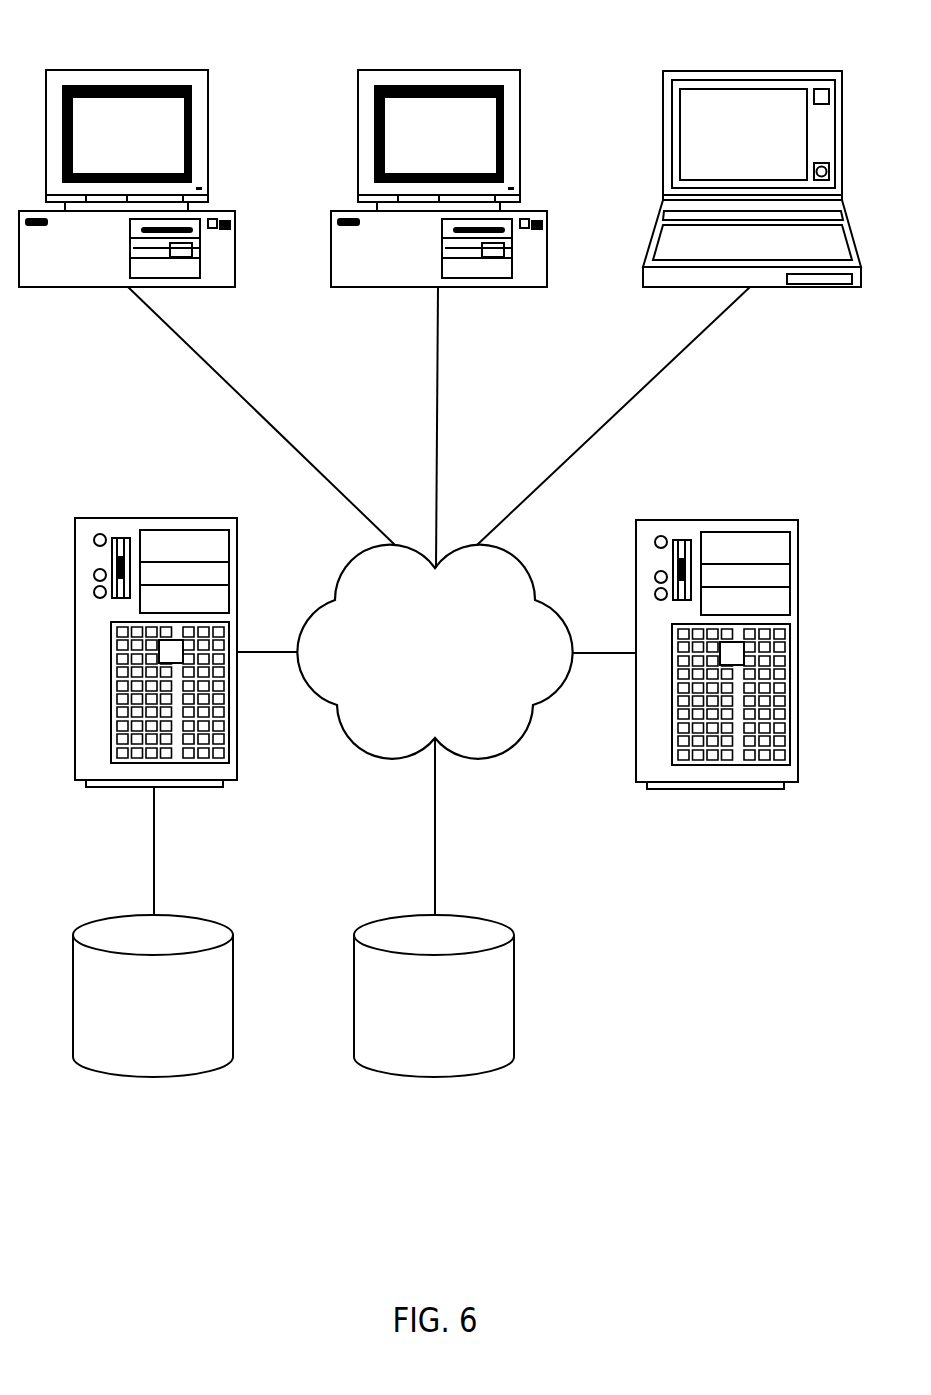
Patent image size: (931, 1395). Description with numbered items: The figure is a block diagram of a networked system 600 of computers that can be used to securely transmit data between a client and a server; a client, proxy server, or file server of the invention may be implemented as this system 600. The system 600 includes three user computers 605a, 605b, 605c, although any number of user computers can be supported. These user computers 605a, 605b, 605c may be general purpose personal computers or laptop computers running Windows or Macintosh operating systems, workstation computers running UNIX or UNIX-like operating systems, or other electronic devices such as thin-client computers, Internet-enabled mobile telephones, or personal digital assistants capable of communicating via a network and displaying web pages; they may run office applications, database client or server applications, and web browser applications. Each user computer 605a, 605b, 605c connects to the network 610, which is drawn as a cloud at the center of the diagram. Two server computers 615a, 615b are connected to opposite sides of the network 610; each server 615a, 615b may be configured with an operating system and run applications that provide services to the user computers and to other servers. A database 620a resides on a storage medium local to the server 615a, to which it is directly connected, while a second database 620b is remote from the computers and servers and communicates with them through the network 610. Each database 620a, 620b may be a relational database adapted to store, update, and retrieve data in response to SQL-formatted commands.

The system 600 is at (704, 1143).
The user computer 605a is at (235, 230).
The user computer 605b is at (331, 232).
The user computer 605c is at (663, 180).
The network 610 is at (472, 762).
The server 615a is at (75, 650).
The server 615b is at (797, 655).
The database 620a is at (150, 1077).
The database 620b is at (431, 1077).